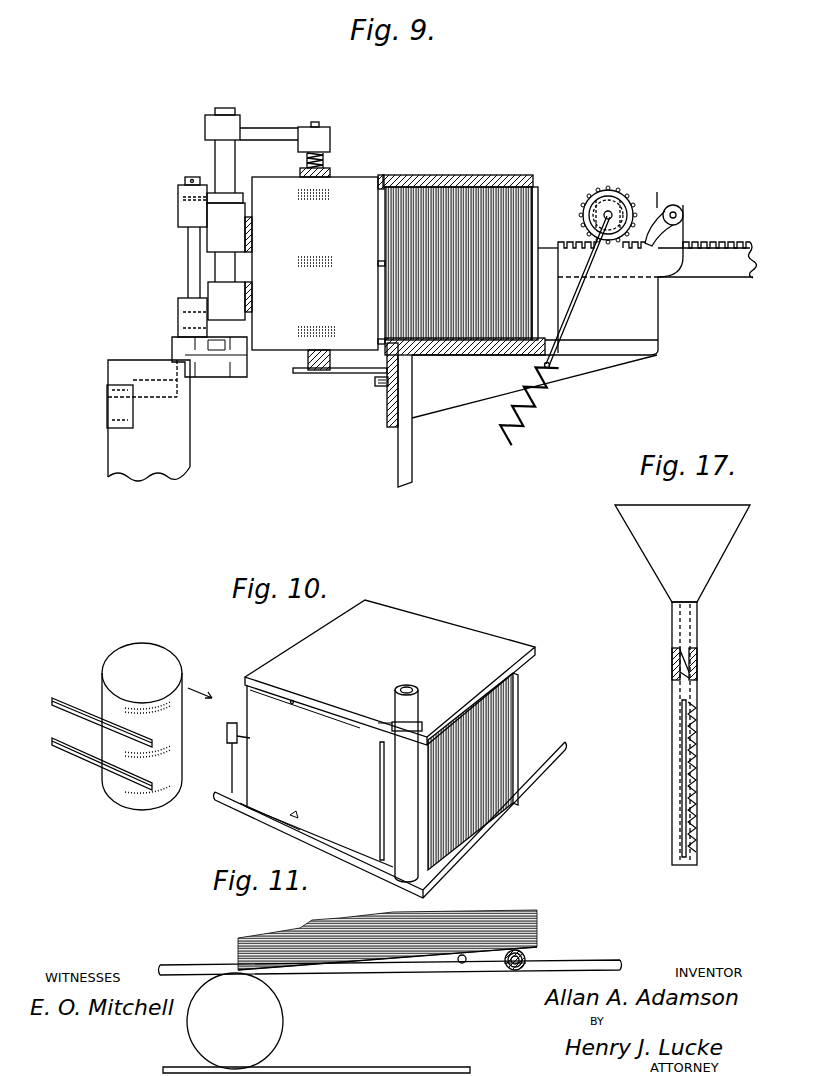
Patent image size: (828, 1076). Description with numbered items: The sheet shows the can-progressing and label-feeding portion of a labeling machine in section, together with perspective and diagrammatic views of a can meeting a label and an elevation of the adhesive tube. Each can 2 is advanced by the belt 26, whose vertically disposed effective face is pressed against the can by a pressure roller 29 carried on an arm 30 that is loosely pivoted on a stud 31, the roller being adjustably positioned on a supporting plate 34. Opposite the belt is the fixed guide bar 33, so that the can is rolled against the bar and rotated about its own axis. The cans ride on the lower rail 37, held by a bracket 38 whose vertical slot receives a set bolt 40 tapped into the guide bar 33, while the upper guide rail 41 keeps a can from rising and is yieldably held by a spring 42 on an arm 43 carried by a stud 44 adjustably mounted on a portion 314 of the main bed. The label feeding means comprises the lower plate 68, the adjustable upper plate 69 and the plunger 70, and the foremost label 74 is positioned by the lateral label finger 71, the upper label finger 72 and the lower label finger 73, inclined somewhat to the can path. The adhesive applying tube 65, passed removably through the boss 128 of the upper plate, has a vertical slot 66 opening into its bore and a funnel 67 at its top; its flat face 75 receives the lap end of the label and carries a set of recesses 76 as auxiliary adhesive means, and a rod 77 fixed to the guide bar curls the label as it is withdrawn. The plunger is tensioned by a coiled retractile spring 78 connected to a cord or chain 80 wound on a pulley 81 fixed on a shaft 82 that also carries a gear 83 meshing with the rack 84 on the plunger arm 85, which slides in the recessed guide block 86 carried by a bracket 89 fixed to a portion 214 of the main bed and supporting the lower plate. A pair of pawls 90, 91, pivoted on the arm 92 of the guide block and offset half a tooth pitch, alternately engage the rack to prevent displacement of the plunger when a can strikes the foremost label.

In FIG. 9, the can 2 is at (323, 213).
In FIG. 10, the can 2 is at (130, 660).
In FIG. 11, the can 2 is at (235, 1021).
In FIG. 9, the belt 26 is at (252, 287).
In FIG. 10, the belt 26 is at (82, 757).
In FIG. 11, the belt 26 is at (315, 1067).
In FIG. 9, the pressure roller 29 is at (240, 210).
In FIG. 9, the arm 30 is at (197, 185).
In FIG. 9, the stud 31 is at (188, 240).
In FIG. 9, the guide bar 33 is at (390, 405).
In FIG. 11, the guide bar 33 is at (187, 963).
In FIG. 9, the supporting plate 34 is at (178, 340).
In FIG. 9, the lower rail 37 is at (305, 360).
In FIG. 9, the bracket 38 is at (333, 373).
In FIG. 9, the set bolt 40 is at (377, 381).
In FIG. 9, the upper guide rail 41 is at (330, 167).
In FIG. 9, the spring 42 is at (333, 135).
In FIG. 9, the arm 43 is at (316, 126).
In FIG. 9, the stud 44 is at (228, 108).
In FIG. 17, the adhesive applying tube 65 is at (698, 627).
In FIG. 10, the adhesive applying tube 65 is at (413, 712).
In FIG. 11, the adhesive applying tube 65 is at (517, 970).
In FIG. 17, the vertical slot 66 is at (682, 728).
In FIG. 11, the vertical slot 66 is at (513, 955).
In FIG. 17, the funnel 67 is at (647, 535).
In FIG. 9, the lower plate 68 is at (463, 347).
In FIG. 10, the lower plate 68 is at (497, 823).
In FIG. 9, the upper plate 69 is at (473, 175).
In FIG. 10, the upper plate 69 is at (447, 635).
In FIG. 9, the plunger 70 is at (538, 193).
In FIG. 10, the plunger 70 is at (518, 720).
In FIG. 9, the lateral label finger 71 is at (379, 263).
In FIG. 10, the lateral label finger 71 is at (247, 738).
In FIG. 9, the upper label finger 72 is at (385, 177).
In FIG. 10, the upper label finger 72 is at (295, 707).
In FIG. 9, the lower label finger 73 is at (379, 341).
In FIG. 10, the lower label finger 73 is at (297, 817).
In FIG. 9, the label 74 is at (385, 223).
In FIG. 10, the label 74 is at (327, 737).
In FIG. 11, the label 74 is at (478, 957).
In FIG. 17, the flat face 75 is at (697, 657).
In FIG. 10, the flat face 75 is at (418, 690).
In FIG. 11, the flat face 75 is at (515, 950).
In FIG. 17, the recess 76 is at (697, 763).
In FIG. 11, the recess 76 is at (508, 965).
In FIG. 10, the rod 77 is at (378, 767).
In FIG. 11, the rod 77 is at (463, 955).
In FIG. 9, the coiled retractile spring 78 is at (541, 418).
In FIG. 9, the cord or chain 80 is at (585, 305).
In FIG. 9, the pulley 81 is at (630, 200).
In FIG. 9, the shaft 82 is at (607, 211).
In FIG. 9, the gear 83 is at (605, 200).
In FIG. 9, the rack 84 is at (725, 240).
In FIG. 9, the arm 85 is at (700, 267).
In FIG. 9, the guide block 86 is at (645, 303).
In FIG. 9, the bracket 89 is at (603, 346).
In FIG. 9, the pawl 90 is at (657, 208).
In FIG. 9, the pawl 91 is at (713, 222).
In FIG. 9, the arm 92 is at (673, 237).
In FIG. 10, the boss 128 is at (378, 723).
In FIG. 9, the portion of main bed 214 is at (398, 457).
In FIG. 9, the portion of main bed 314 is at (185, 415).